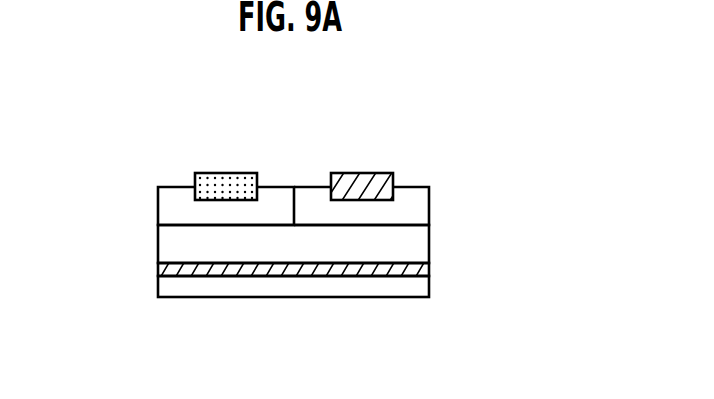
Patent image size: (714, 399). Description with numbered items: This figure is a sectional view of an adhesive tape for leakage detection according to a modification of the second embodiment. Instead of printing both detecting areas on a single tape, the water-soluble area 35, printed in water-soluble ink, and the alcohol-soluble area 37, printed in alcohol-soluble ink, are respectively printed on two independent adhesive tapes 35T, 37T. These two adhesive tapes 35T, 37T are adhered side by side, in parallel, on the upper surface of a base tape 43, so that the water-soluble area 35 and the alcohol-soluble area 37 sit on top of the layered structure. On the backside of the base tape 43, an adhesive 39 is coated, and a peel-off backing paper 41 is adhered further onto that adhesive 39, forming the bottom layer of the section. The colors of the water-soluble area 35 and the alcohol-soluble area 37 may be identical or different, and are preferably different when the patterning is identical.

The water-soluble area 35 is at (355, 180).
The adhesive tape 35T is at (413, 197).
The alcohol-soluble area 37 is at (222, 178).
The adhesive tape 37T is at (177, 197).
The adhesive 39 is at (162, 270).
The peel-off backing paper 41 is at (417, 288).
The base tape 43 is at (415, 243).